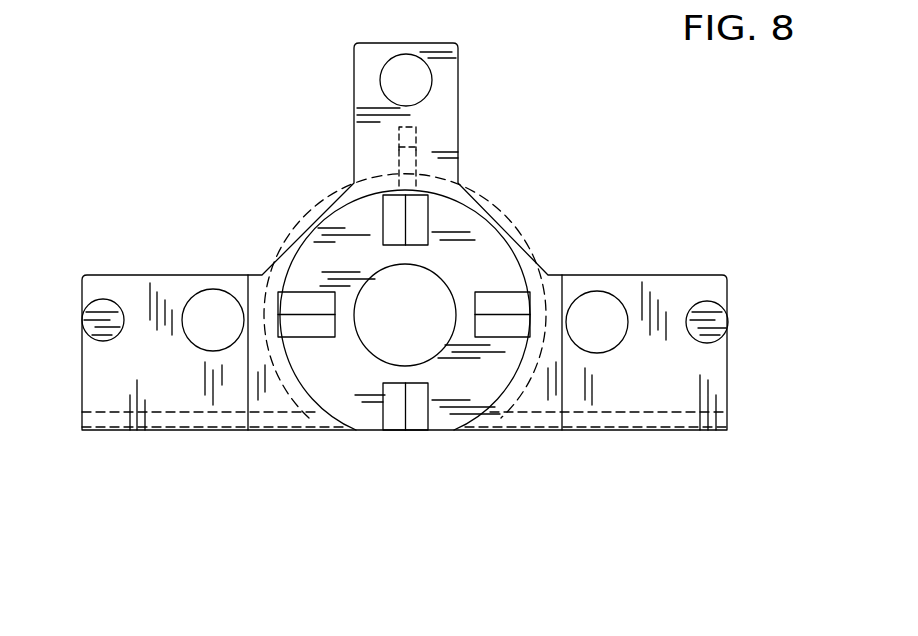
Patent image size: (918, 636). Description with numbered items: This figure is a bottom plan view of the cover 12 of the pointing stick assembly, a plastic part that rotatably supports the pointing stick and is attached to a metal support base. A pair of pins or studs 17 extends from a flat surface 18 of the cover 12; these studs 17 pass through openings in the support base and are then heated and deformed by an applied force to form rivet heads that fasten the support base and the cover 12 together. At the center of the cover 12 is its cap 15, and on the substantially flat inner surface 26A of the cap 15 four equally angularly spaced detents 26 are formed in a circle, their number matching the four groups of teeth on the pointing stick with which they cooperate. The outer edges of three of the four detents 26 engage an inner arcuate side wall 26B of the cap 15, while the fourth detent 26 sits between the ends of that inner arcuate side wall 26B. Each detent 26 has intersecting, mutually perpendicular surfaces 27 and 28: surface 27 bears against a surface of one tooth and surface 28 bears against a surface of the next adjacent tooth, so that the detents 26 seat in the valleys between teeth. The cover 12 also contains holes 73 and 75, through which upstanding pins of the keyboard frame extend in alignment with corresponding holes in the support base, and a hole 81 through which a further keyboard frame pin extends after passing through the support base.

The cover 12 is at (110, 430).
The cap 15 is at (562, 278).
The pins or studs 17 is at (102, 299).
The flat surface 18 is at (153, 385).
The detents 26 is at (310, 292).
The inner surface 26A is at (476, 228).
The inner arcuate side wall 26B is at (517, 368).
The surface 27 is at (392, 433).
The surface 28 is at (417, 410).
The hole 73 is at (203, 293).
The hole 75 is at (606, 350).
The hole 81 is at (382, 76).